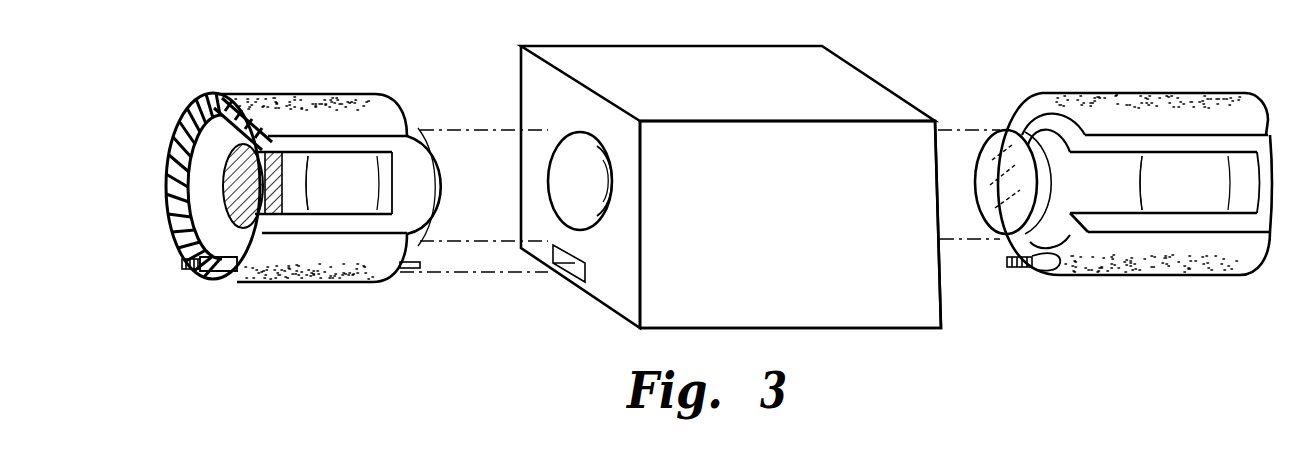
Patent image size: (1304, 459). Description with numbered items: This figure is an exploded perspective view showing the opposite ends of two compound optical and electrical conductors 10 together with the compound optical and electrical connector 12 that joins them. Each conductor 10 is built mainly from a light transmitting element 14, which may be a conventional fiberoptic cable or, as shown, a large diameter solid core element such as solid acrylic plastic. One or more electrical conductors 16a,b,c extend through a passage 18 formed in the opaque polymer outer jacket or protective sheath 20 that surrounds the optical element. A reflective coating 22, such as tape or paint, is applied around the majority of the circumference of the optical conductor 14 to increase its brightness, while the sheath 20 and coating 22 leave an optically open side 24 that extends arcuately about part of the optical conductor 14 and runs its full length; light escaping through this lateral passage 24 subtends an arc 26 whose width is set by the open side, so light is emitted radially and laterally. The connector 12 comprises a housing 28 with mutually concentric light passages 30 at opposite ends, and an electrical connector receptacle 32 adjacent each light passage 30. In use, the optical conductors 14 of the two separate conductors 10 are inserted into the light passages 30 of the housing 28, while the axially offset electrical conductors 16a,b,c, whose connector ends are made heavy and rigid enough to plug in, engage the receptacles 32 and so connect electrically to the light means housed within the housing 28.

The compound optical and electrical conductor 10 is at (330, 313).
The compound optical and electrical connector 12 is at (891, 352).
The light transmitting element 14 is at (354, 201).
The electrical conductors 16a,b,c is at (197, 283).
The passage 18 is at (229, 279).
The outer jacket or protective sheath 20 is at (258, 94).
The reflective coating 22 is at (1046, 125).
The optically open side 24 is at (283, 172).
The arc 26 is at (409, 147).
The housing 28 is at (783, 198).
The light passages 30 is at (560, 184).
The electrical connector receptacles 32 is at (579, 270).